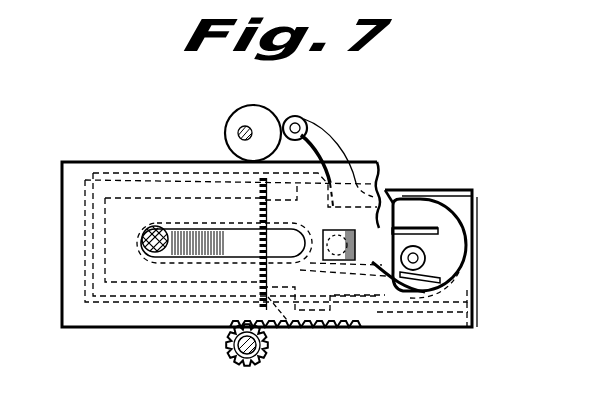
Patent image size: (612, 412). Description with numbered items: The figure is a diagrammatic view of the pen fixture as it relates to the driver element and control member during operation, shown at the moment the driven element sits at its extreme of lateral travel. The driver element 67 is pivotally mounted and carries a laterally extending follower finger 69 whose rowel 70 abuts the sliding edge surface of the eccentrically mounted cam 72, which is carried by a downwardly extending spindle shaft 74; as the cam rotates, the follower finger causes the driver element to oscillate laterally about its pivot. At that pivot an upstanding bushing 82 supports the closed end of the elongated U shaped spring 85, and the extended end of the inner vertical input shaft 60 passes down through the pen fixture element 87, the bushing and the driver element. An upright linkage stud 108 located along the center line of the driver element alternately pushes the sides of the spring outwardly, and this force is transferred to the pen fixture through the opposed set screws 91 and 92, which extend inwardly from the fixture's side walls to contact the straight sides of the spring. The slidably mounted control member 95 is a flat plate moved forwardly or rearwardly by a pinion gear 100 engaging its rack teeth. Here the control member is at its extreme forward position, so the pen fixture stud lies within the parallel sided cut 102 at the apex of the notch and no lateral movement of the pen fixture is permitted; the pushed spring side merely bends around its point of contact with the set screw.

The inner vertical input shaft 60 is at (145, 232).
The driver element 67 is at (85, 302).
The follower finger 69 is at (342, 144).
The rowel 70 is at (303, 112).
The eccentrically mounted cam 72 is at (226, 123).
The spindle shaft 74 is at (238, 136).
The bushing 82 is at (146, 250).
The U shaped spring 85 is at (170, 264).
The pen fixture element 87 is at (111, 296).
The set screw 91 is at (288, 329).
The set screw 92 is at (278, 187).
The control member 95 is at (462, 333).
The pinion gear 100 is at (265, 359).
The parallel sided cut 102 is at (360, 253).
The linkage stud 108 is at (426, 257).